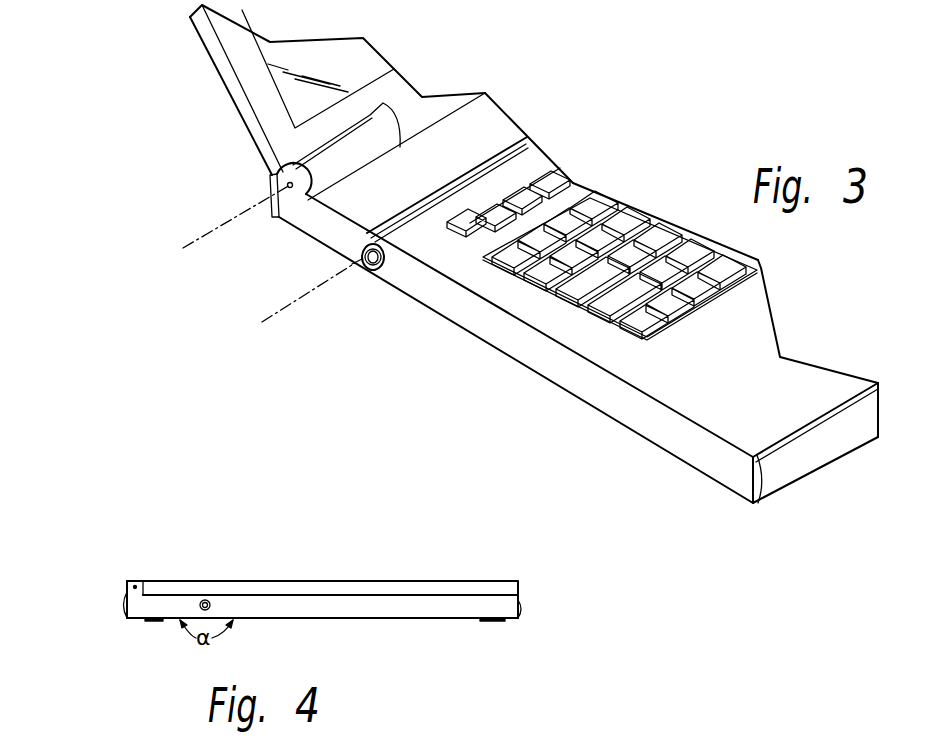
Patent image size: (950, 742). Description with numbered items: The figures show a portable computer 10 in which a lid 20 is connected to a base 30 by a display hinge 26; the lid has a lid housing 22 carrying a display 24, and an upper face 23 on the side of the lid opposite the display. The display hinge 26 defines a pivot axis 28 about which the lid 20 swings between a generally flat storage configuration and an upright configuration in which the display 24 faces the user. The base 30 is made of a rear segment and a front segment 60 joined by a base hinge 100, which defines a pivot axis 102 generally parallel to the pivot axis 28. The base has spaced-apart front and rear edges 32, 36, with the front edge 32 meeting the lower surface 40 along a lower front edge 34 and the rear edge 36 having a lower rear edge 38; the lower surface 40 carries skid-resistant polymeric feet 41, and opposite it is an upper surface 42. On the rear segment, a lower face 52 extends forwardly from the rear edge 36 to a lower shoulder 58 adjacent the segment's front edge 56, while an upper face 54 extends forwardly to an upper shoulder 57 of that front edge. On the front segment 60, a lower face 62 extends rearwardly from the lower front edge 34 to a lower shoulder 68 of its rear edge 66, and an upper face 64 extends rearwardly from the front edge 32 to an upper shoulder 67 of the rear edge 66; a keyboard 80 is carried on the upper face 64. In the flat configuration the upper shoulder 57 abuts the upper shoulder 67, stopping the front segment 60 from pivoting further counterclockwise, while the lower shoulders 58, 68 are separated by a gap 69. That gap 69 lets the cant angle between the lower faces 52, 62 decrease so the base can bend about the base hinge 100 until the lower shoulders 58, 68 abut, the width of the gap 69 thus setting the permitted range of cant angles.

In FIG. 4, the portable computer 10 is at (92, 517).
In FIG. 3, the lid 20 is at (301, 111).
In FIG. 4, the lid 20 is at (335, 572).
In FIG. 3, the lid housing 22 is at (241, 113).
In FIG. 4, the lid housing 22 is at (427, 590).
In FIG. 4, the upper face 23 is at (340, 581).
In FIG. 3, the display 24 is at (356, 76).
In FIG. 3, the display hinge 26 is at (322, 203).
In FIG. 4, the display hinge 26 is at (135, 586).
In FIG. 3, the pivot axis 28 is at (217, 227).
In FIG. 3, the base 30 is at (585, 319).
In FIG. 4, the base 30 is at (346, 623).
In FIG. 3, the front edge 32 is at (830, 447).
In FIG. 4, the front edge 32 is at (523, 605).
In FIG. 3, the lower front edge 34 is at (758, 504).
In FIG. 4, the lower front edge 34 is at (518, 619).
In FIG. 4, the rear edge 36 is at (122, 605).
In FIG. 4, the lower rear edge 38 is at (127, 618).
In FIG. 4, the lower surface 40 is at (443, 623).
In FIG. 4, the feet 41 is at (155, 619).
In FIG. 3, the upper surface 42 is at (498, 128).
In FIG. 4, the lower face 52 is at (170, 619).
In FIG. 3, the upper face 54 is at (457, 133).
In FIG. 3, the front edge 56 is at (391, 268).
In FIG. 3, the upper shoulder 57 is at (408, 212).
In FIG. 3, the lower shoulder 58 is at (369, 272).
In FIG. 3, the front segment 60 is at (547, 365).
In FIG. 4, the front segment 60 is at (378, 608).
In FIG. 3, the lower face 62 is at (642, 445).
In FIG. 4, the lower face 62 is at (332, 612).
In FIG. 3, the upper face 64 is at (808, 385).
In FIG. 3, the rear edge 66 is at (392, 313).
In FIG. 3, the upper shoulder 67 is at (517, 150).
In FIG. 3, the lower shoulder 68 is at (372, 272).
In FIG. 3, the gap 69 is at (369, 283).
In FIG. 3, the keyboard 80 is at (629, 222).
In FIG. 3, the base hinge 100 is at (352, 263).
In FIG. 4, the base hinge 100 is at (205, 600).
In FIG. 3, the pivot axis 102 is at (287, 322).